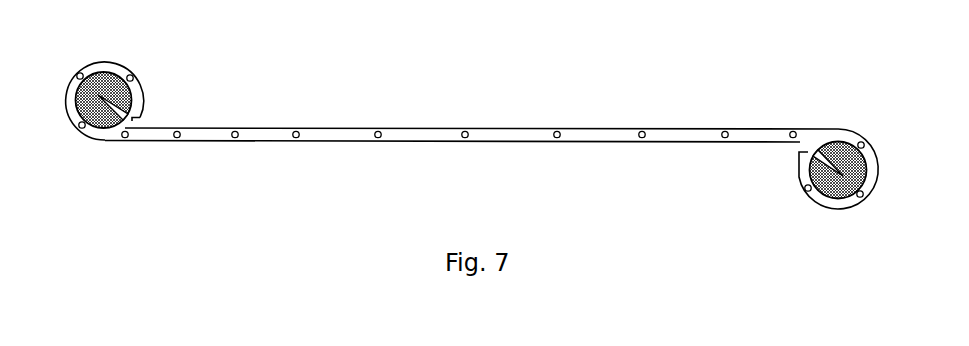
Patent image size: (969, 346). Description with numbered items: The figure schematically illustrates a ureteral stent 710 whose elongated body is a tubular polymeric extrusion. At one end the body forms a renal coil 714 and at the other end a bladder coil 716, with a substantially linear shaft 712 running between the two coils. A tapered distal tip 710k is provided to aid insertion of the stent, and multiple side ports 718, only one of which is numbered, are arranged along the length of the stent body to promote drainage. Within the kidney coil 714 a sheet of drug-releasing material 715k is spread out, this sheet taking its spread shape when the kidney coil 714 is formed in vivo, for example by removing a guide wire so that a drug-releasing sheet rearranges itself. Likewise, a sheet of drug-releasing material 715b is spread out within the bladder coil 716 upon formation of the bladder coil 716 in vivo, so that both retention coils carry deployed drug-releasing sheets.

The stent 710 is at (471, 130).
The substantially linear shaft 712 is at (503, 136).
The renal coil 714 is at (119, 67).
The sheet of drug-releasing material 715k is at (105, 124).
The tapered distal tip 710k is at (141, 117).
The bladder coil 716 is at (833, 210).
The sheet of drug-releasing material 715b is at (810, 176).
The side ports 718 is at (378, 129).